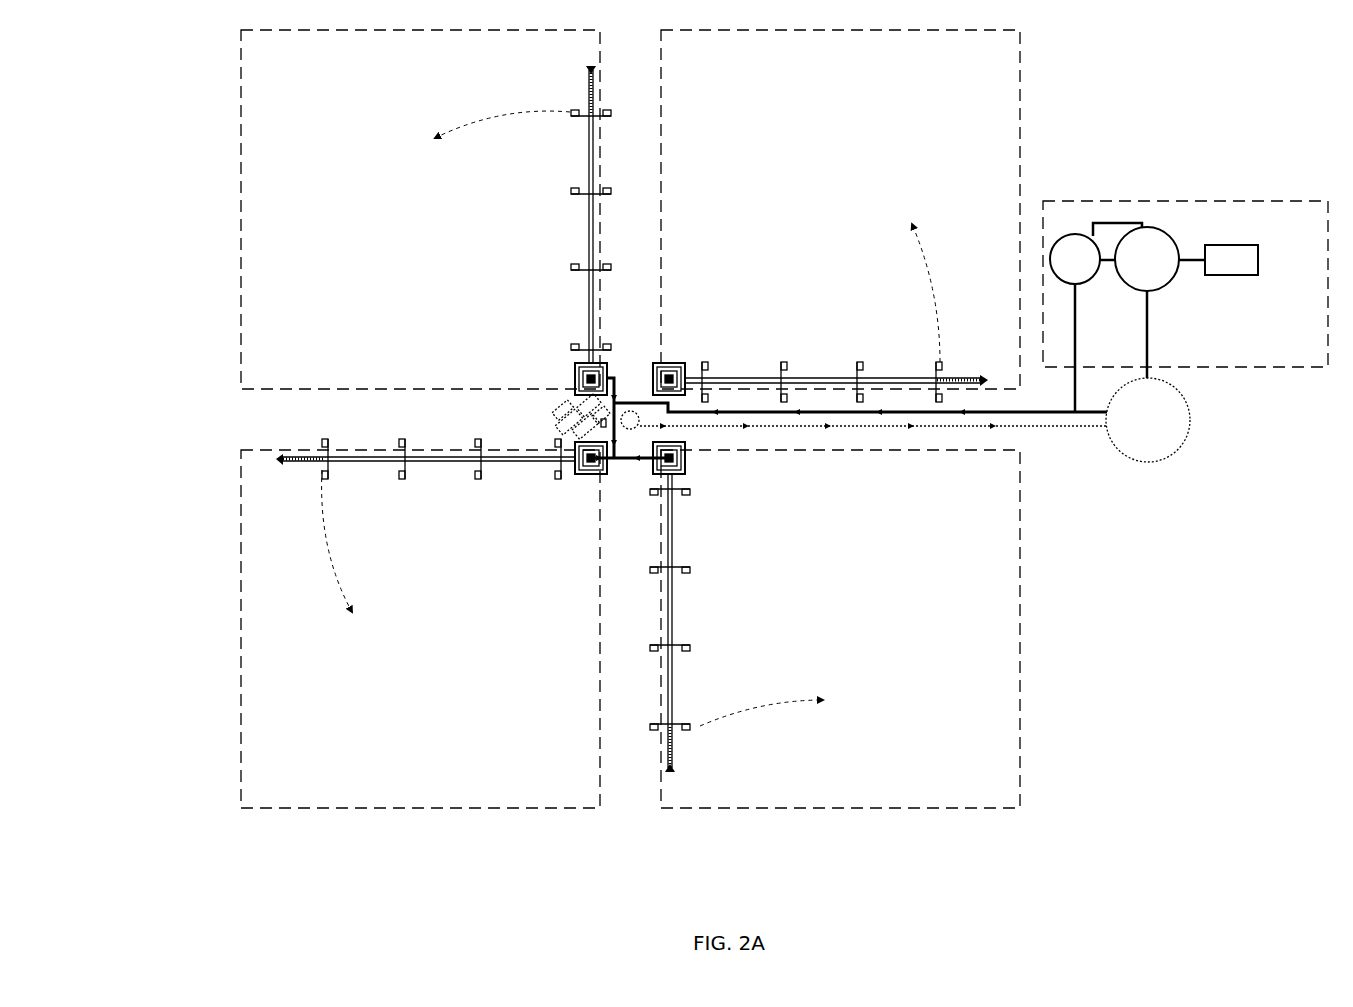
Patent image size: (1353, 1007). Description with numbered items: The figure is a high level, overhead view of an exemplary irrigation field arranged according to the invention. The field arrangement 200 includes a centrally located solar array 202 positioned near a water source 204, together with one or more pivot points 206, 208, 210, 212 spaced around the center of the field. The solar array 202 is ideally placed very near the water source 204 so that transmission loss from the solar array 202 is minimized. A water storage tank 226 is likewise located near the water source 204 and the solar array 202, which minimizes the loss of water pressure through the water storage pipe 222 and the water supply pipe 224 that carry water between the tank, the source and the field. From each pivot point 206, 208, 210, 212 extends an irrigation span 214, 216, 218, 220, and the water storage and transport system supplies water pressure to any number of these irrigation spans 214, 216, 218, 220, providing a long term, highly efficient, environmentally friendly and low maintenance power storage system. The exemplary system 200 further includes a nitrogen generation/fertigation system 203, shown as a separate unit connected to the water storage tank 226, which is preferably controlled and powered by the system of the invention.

The field arrangement 200 is at (1116, 97).
The solar array 202 is at (565, 422).
The nitrogen generation/fertigation system 203 is at (1185, 201).
The water source 204 is at (630, 425).
The pivot point 206 is at (676, 464).
The pivot point 208 is at (682, 375).
The pivot point 210 is at (583, 370).
The pivot point 212 is at (592, 468).
The irrigation span 214 is at (665, 645).
The irrigation span 216 is at (827, 375).
The irrigation span 218 is at (590, 97).
The irrigation span 220 is at (293, 457).
The water storage pipe 222 is at (948, 429).
The water supply pipe 224 is at (1043, 413).
The water storage tank 226 is at (1185, 410).